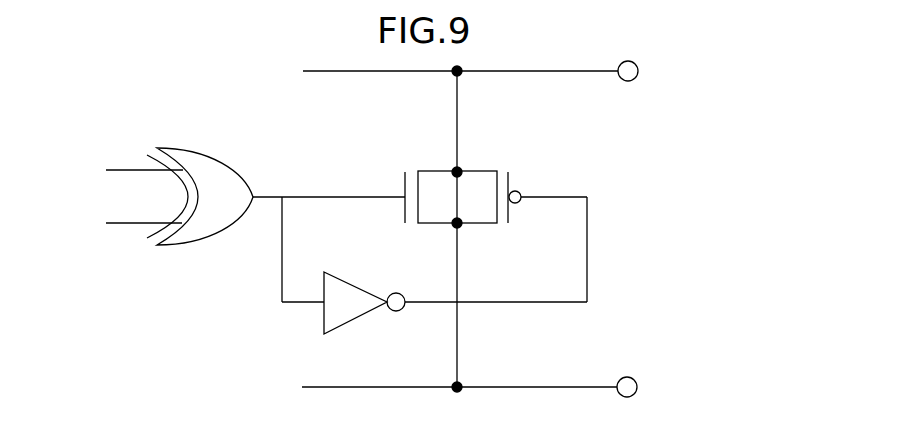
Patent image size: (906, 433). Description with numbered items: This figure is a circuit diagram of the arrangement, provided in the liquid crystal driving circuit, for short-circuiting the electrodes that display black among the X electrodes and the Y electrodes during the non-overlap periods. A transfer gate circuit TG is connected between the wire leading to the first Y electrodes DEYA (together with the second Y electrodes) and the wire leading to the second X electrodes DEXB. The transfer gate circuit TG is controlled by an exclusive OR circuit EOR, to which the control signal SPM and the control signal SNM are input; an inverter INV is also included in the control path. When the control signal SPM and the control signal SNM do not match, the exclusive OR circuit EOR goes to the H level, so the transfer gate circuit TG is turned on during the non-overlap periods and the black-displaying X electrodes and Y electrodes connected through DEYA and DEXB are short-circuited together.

The exclusive OR circuit EOR is at (215, 228).
The inverter INV is at (324, 317).
The transfer gate circuit TG is at (483, 171).
The control signal SPM is at (109, 170).
The control signal SNM is at (108, 223).
The first Y electrodes DEYA is at (693, 71).
The second X electrodes DEXB is at (660, 388).